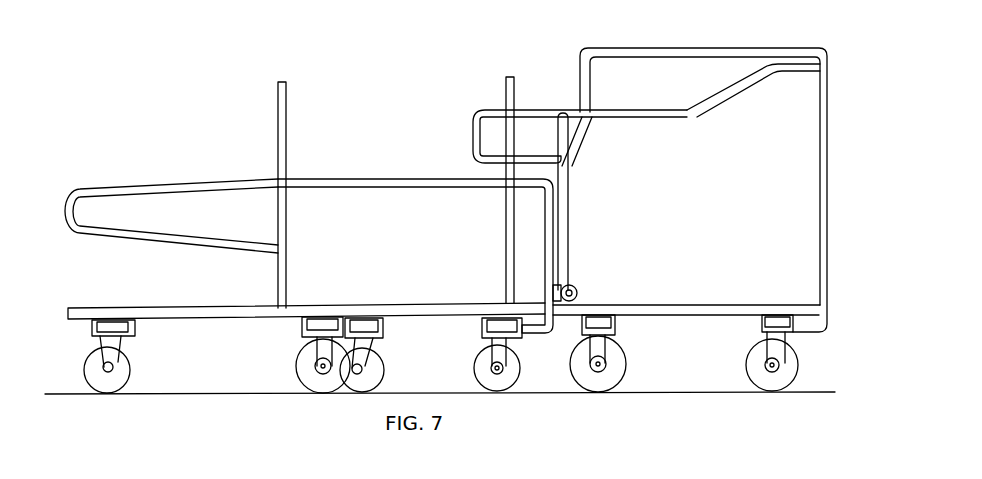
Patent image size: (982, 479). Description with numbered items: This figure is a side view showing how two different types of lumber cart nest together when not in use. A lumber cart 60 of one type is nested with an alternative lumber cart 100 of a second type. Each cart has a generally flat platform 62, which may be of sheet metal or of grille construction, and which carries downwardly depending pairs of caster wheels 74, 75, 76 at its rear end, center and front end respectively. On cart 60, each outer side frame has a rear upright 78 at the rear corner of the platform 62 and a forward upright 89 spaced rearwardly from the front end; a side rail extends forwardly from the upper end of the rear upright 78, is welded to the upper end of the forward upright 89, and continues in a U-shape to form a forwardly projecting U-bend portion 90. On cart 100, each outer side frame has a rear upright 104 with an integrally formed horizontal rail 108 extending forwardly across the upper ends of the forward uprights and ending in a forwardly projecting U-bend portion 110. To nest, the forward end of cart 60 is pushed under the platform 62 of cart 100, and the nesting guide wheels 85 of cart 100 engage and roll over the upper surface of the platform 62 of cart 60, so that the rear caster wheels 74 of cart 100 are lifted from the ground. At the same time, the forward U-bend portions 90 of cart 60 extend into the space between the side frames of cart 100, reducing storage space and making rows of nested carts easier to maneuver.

The lumber cart 60 is at (728, 40).
The platform 62 is at (357, 303).
The rear caster wheels 74 is at (476, 363).
The center caster wheels 75 is at (296, 362).
The front caster wheels 76 is at (130, 368).
The rear upright 78 is at (819, 141).
The nesting guide wheels 85 is at (578, 287).
The forward upright 89 is at (569, 208).
The U-bend portion 90 is at (478, 135).
The alternative lumber cart 100 is at (222, 178).
The rear upright 104 is at (548, 235).
The horizontal rail 108 is at (378, 178).
The U-bend portion 110 is at (106, 244).